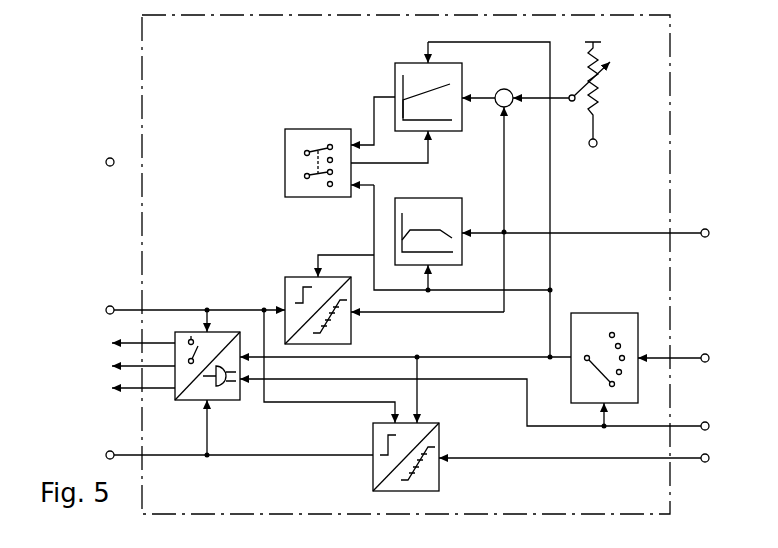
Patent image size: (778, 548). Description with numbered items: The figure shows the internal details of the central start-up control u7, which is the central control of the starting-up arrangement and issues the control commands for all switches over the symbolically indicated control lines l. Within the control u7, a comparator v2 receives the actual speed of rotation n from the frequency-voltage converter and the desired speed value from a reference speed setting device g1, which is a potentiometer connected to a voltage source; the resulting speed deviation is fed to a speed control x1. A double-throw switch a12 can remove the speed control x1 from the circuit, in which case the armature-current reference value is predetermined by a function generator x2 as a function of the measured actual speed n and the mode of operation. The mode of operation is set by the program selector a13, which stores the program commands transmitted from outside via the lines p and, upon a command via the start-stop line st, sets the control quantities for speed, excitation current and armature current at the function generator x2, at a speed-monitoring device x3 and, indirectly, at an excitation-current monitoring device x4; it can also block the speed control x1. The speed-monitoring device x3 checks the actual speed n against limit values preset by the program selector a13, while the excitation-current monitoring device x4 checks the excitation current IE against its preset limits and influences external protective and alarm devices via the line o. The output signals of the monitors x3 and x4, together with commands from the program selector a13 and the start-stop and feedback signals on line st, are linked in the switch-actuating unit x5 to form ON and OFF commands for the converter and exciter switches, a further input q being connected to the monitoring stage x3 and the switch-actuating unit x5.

The central start-up control u7 is at (142, 68).
The speed control x1 is at (441, 132).
The function generator x2 is at (432, 198).
The speed-monitoring device x3 is at (300, 277).
The excitation-current monitoring device x4 is at (373, 435).
The switch-actuating unit x5 is at (174, 331).
The double-throw switch a12 is at (335, 119).
The program selector a13 is at (590, 313).
The comparator v2 is at (503, 89).
The reference speed setting device g1 is at (598, 98).
The actual speed of rotation n is at (610, 186).
The lines p is at (704, 370).
The start-stop line st is at (701, 417).
The excitation current IE is at (704, 475).
The input q is at (102, 311).
The control lines l is at (97, 361).
The line o is at (102, 455).